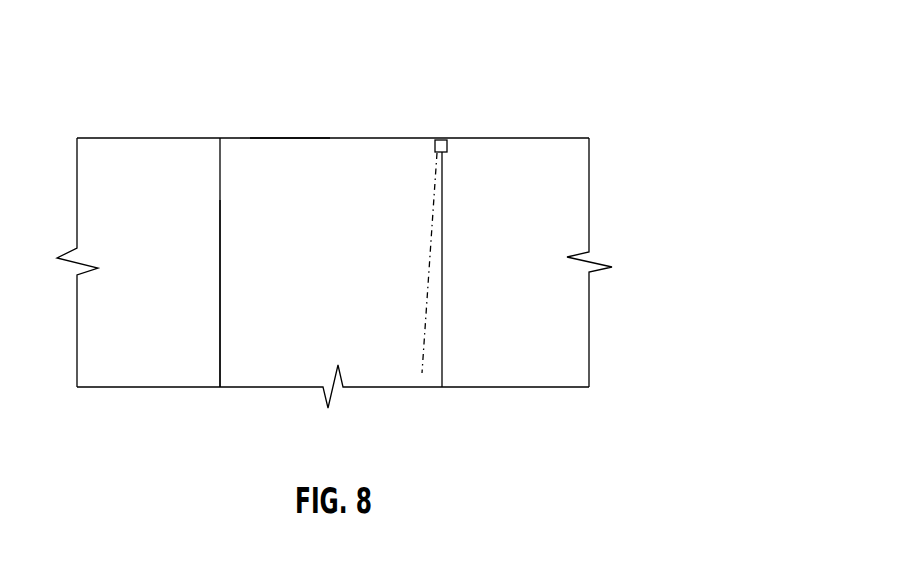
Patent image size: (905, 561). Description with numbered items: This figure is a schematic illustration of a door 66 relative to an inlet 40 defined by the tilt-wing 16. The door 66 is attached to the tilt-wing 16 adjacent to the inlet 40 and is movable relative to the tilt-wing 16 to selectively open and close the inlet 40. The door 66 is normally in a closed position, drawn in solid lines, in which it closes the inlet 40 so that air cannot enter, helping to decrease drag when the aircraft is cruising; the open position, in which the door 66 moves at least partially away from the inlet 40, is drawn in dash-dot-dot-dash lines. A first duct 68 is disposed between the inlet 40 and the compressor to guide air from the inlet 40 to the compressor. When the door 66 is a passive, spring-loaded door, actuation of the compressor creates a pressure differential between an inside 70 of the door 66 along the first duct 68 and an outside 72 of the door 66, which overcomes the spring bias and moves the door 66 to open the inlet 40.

The tilt-wing 16 is at (577, 112).
The inlet 40 is at (291, 122).
The door 66 is at (340, 137).
The first duct 68 is at (246, 372).
The inside 70 is at (310, 140).
The outside 72 is at (412, 137).